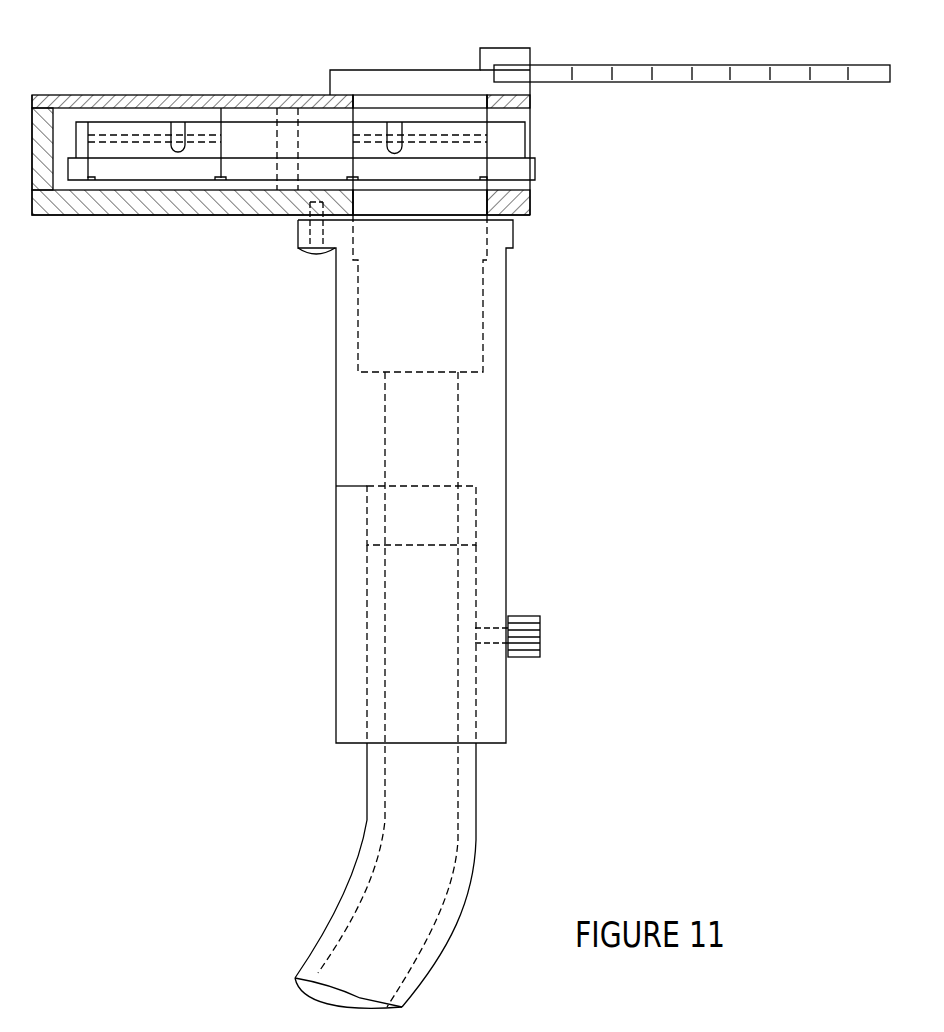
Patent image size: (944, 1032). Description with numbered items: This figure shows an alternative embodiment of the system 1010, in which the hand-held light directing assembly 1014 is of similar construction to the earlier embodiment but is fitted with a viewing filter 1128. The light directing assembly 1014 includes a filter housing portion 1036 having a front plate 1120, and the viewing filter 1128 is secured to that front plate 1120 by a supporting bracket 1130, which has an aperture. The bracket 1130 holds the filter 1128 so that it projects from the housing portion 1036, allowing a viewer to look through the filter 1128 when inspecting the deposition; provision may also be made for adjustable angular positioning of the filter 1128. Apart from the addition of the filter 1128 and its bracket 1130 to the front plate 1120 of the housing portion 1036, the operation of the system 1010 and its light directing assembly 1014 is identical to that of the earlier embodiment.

The front plate 1120 is at (188, 93).
The filter housing portion 1036 is at (180, 217).
The supporting bracket 1130 is at (402, 78).
The viewing filter 1128 is at (677, 73).
The system 1010 is at (663, 244).
The hand-held light directing assembly 1014 is at (506, 353).